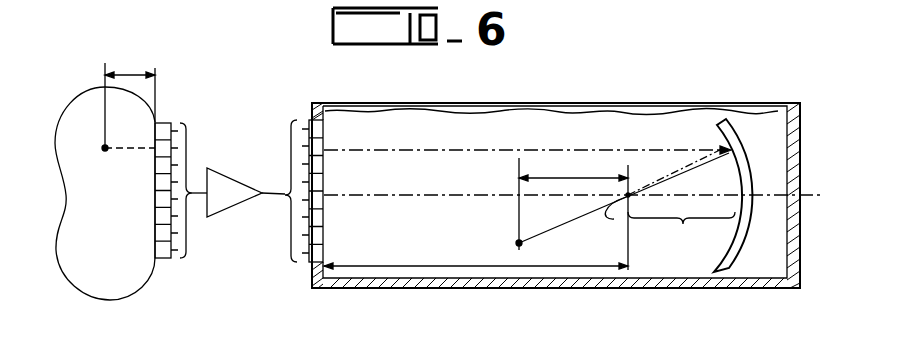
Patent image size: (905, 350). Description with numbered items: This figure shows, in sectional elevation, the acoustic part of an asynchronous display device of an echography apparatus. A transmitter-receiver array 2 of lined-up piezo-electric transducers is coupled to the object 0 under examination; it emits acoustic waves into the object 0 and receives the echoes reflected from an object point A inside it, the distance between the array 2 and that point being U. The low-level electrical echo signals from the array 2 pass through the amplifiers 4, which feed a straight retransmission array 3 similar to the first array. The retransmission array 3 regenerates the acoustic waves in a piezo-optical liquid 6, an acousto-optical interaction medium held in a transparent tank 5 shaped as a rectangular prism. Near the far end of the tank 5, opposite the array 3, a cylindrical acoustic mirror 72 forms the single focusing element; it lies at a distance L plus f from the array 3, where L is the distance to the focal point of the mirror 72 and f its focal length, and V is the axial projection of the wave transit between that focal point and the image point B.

The object 0 is at (90, 298).
The transmitter-receiver array 2 is at (162, 264).
The retransmission array 3 is at (306, 262).
The amplifiers 4 is at (236, 210).
The tank 5 is at (607, 288).
The piezo-optical liquid 6 is at (615, 110).
The cylindrical acoustic mirror 72 is at (751, 195).